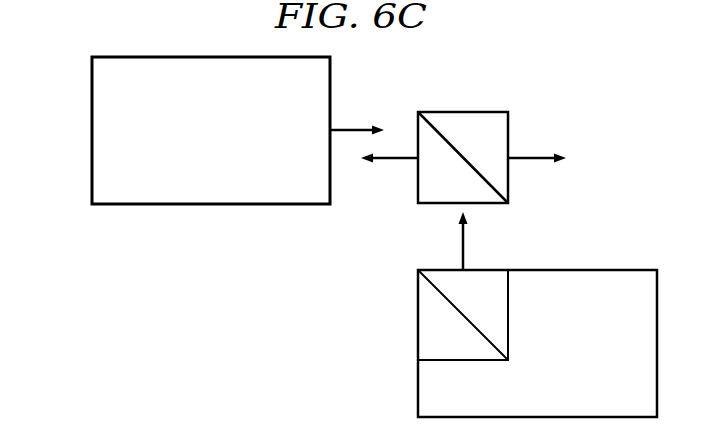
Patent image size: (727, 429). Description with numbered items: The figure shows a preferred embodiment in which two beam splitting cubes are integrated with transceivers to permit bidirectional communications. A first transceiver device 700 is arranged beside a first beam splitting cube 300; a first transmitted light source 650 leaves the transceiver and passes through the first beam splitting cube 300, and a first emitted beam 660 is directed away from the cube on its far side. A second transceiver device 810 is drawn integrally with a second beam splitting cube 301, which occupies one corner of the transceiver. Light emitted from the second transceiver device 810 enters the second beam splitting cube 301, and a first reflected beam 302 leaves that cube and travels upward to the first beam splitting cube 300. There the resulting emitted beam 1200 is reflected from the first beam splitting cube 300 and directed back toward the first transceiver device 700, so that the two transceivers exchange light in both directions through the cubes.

The first transceiver device 700 is at (103, 90).
The first beam splitting cube 300 is at (483, 123).
The first transmitted light source 650 is at (355, 127).
The resulting emitted beam 1200 is at (392, 160).
The first emitted beam 660 is at (533, 153).
The first reflected beam 302 is at (461, 243).
The second beam splitting cube 301 is at (483, 280).
The second transceiver device 810 is at (570, 277).